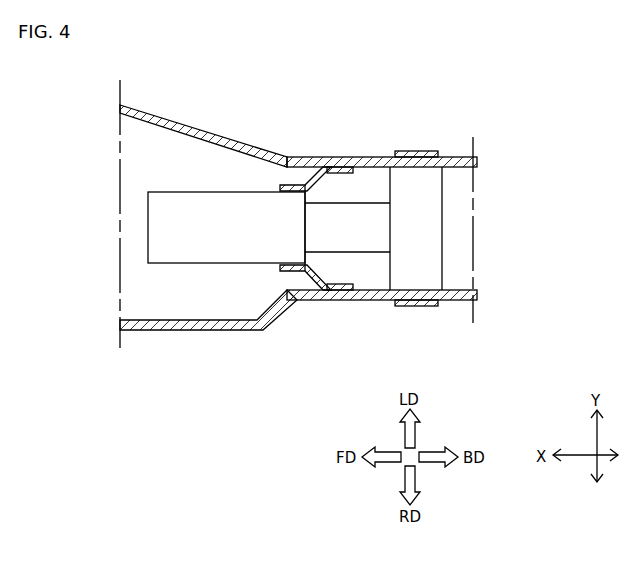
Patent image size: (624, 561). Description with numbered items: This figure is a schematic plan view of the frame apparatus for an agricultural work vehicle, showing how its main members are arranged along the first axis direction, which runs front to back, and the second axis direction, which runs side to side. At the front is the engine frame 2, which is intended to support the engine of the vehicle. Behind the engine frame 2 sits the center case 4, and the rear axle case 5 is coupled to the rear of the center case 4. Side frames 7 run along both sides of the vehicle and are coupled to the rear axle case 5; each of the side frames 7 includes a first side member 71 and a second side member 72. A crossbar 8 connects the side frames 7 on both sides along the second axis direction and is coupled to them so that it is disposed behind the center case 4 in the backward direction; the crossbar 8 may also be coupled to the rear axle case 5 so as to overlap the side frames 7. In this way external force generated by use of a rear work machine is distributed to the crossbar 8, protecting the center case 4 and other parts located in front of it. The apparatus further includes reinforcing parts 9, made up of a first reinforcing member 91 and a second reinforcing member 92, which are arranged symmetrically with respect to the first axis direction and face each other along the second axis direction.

The engine frame 2 is at (237, 207).
The center case 4 is at (363, 217).
The rear axle case 5 is at (412, 197).
The side frames 7 is at (338, 217).
The first side member 71 is at (410, 288).
The second side member 72 is at (478, 162).
The crossbar 8 is at (417, 306).
The reinforcing parts 9 is at (316, 178).
The first reinforcing member 91 is at (333, 282).
The second reinforcing member 92 is at (288, 193).